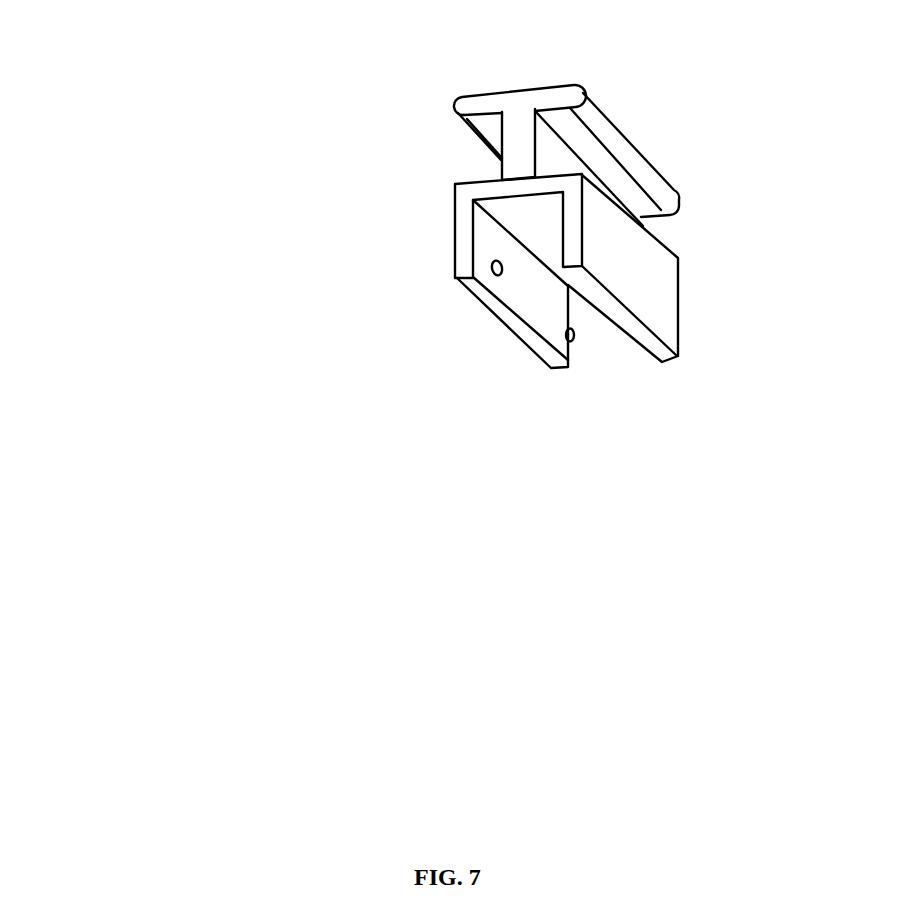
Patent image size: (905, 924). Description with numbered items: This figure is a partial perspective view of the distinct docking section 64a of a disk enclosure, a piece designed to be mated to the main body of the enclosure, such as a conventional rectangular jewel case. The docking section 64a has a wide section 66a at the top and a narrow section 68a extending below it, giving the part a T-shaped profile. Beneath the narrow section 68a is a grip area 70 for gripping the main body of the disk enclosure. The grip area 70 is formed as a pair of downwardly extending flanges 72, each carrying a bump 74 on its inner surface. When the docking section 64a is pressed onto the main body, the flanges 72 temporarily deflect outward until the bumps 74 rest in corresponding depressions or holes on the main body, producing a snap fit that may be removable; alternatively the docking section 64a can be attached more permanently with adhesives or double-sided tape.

The docking section 64a is at (203, 133).
The wide section 66a is at (470, 104).
The narrow section 68a is at (517, 161).
The grip area 70 is at (520, 388).
The flanges 72 is at (467, 237).
The bumps 74 is at (493, 272).